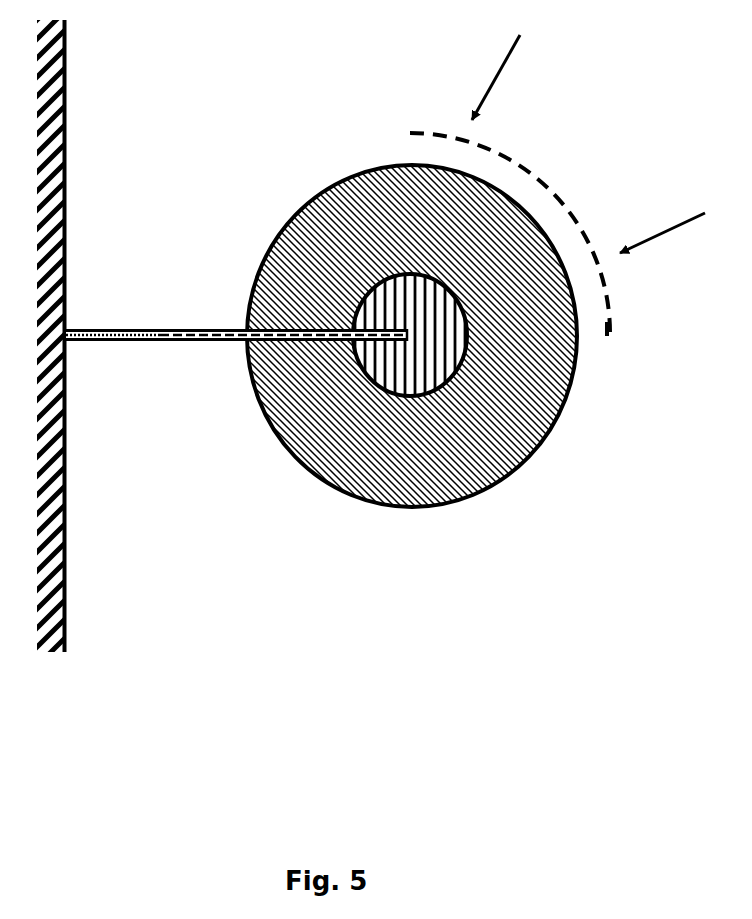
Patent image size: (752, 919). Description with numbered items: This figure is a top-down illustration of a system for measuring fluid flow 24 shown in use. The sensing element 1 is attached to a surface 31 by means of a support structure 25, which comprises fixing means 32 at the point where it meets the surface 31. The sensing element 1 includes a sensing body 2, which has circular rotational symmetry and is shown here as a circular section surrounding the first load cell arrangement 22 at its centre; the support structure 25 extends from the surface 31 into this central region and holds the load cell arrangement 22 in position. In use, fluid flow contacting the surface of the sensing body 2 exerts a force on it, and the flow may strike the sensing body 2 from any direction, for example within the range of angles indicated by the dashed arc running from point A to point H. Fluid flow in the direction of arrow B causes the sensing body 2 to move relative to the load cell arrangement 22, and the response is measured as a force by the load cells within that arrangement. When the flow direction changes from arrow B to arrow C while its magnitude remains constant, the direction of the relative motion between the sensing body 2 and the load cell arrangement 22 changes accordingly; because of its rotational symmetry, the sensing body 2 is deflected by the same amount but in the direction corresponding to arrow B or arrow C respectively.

The sensing element 1 is at (422, 328).
The sensing body 2 is at (386, 328).
The first load cell arrangement 22 is at (372, 372).
The system for measuring fluid flow 24 is at (258, 213).
The support structure 25 is at (188, 340).
The surface 31 is at (65, 92).
The fixing means 32 is at (80, 330).
The arc end point A is at (505, 221).
The arrow B is at (502, 77).
The arrow C is at (662, 236).
The arc end point H is at (619, 333).